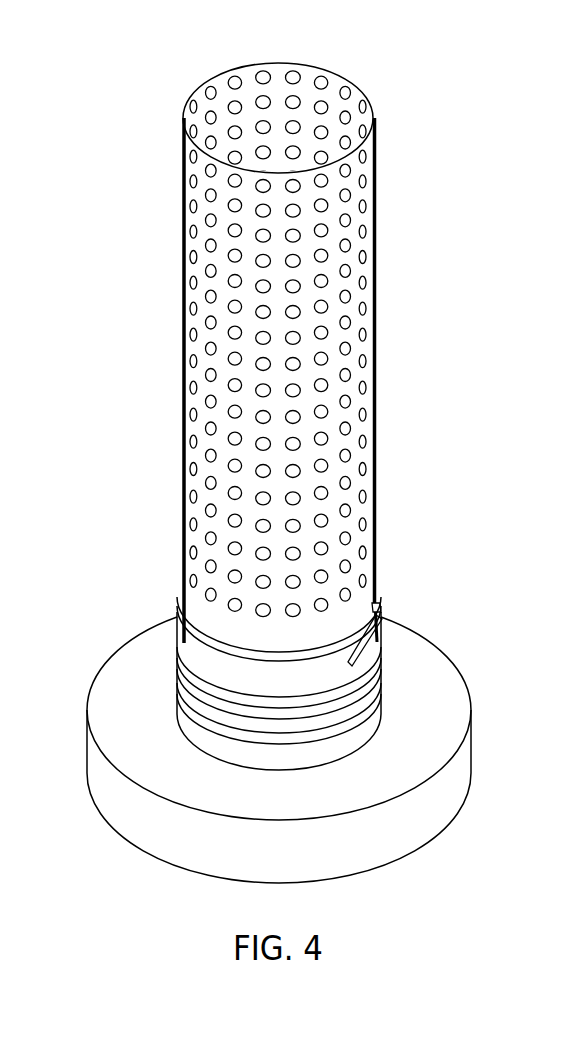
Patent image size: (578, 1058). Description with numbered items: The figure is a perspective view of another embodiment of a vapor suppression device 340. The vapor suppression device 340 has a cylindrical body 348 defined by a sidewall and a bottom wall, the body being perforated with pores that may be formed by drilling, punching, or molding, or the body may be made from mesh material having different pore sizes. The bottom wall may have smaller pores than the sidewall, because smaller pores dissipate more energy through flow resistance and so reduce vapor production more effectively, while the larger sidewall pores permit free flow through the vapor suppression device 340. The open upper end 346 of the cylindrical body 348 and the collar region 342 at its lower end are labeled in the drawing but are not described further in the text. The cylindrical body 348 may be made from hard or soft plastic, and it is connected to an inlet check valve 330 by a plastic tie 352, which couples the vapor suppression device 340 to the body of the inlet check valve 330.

The inlet check valve 330 is at (450, 703).
The vapor suppression device 340 is at (427, 375).
The collar 342 is at (193, 603).
The top rim opening 346 is at (221, 73).
The cylindrical body 348 is at (210, 247).
The tie 352 is at (186, 612).